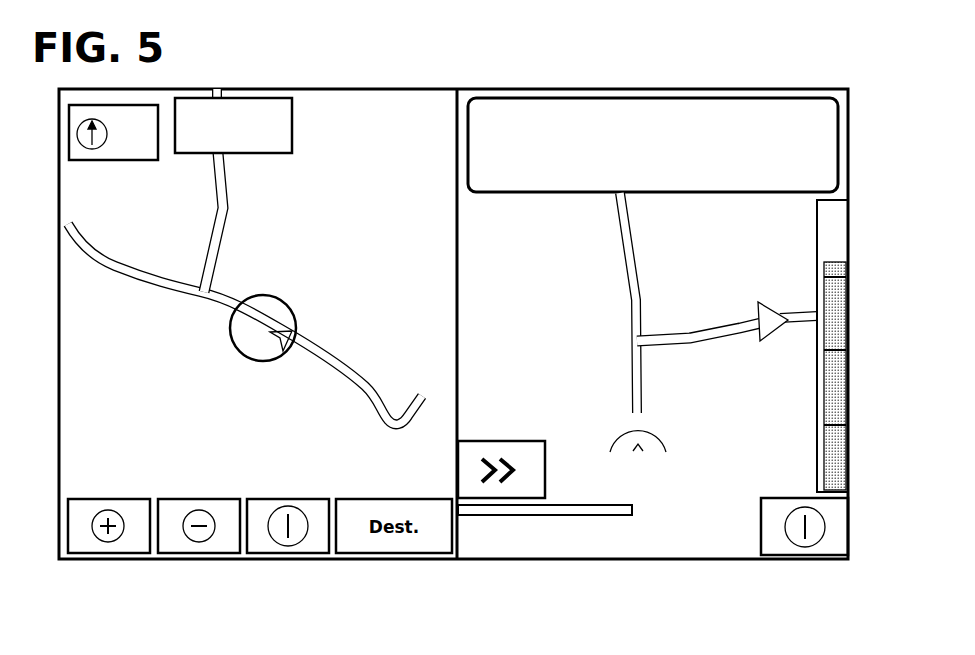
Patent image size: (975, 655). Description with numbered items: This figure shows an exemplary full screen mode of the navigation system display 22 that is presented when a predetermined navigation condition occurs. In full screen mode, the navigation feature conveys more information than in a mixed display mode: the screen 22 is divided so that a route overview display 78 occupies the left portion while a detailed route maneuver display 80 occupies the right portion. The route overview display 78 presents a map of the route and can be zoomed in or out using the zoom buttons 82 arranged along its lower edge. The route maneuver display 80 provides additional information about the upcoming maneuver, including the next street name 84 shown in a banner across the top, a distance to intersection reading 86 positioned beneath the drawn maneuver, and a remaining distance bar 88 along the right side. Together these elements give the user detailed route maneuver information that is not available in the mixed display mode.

The display screen 22 is at (641, 78).
The route overview display 78 is at (324, 185).
The detailed route maneuver display 80 is at (762, 262).
The zoom buttons 82 is at (185, 542).
The next street name 84 is at (522, 128).
The distance to intersection reading 86 is at (662, 497).
The remaining distance bar 88 is at (840, 316).